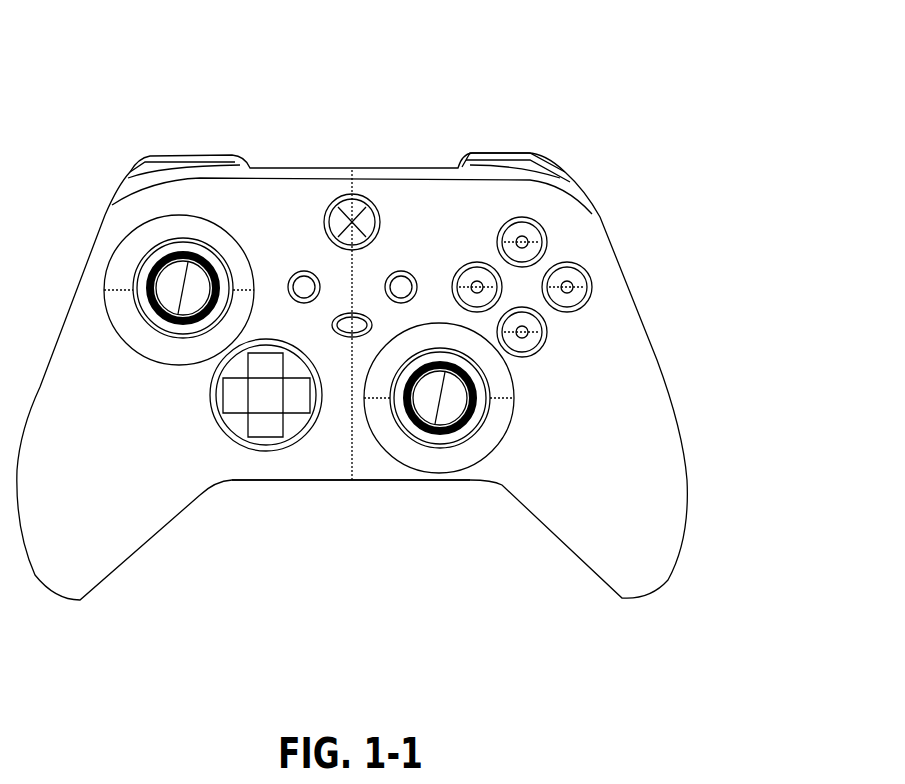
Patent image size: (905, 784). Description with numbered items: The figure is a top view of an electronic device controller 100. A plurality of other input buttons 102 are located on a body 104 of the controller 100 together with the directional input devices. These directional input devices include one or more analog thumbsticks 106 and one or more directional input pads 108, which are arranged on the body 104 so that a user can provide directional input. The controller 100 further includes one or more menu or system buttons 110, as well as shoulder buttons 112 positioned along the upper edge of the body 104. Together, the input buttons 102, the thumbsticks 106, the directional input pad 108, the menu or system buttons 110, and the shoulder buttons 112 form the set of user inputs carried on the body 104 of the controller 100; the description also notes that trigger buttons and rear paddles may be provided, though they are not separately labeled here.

The electronic device controller 100 is at (666, 64).
The input buttons 102 is at (580, 278).
The body 104 is at (332, 460).
The analog thumbstick 106 is at (172, 280).
The directional input pad 108 is at (266, 422).
The menu or system button 110 is at (355, 210).
The shoulder button 112 is at (518, 166).